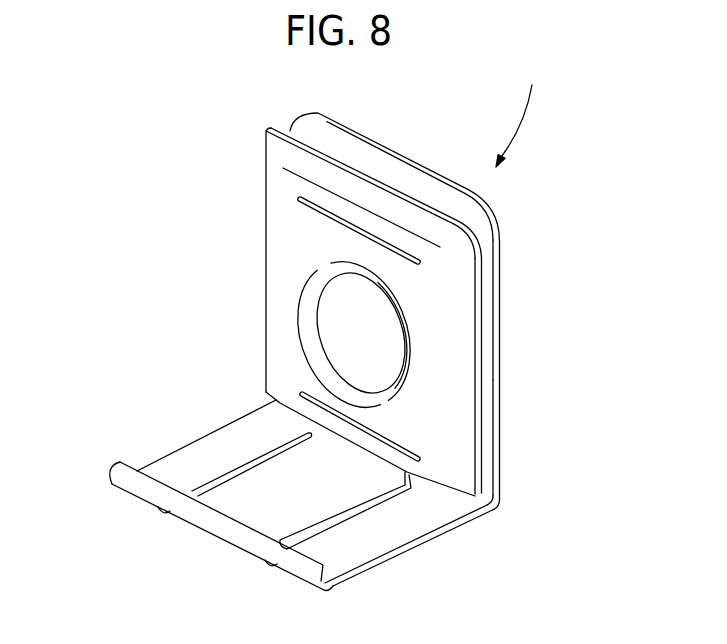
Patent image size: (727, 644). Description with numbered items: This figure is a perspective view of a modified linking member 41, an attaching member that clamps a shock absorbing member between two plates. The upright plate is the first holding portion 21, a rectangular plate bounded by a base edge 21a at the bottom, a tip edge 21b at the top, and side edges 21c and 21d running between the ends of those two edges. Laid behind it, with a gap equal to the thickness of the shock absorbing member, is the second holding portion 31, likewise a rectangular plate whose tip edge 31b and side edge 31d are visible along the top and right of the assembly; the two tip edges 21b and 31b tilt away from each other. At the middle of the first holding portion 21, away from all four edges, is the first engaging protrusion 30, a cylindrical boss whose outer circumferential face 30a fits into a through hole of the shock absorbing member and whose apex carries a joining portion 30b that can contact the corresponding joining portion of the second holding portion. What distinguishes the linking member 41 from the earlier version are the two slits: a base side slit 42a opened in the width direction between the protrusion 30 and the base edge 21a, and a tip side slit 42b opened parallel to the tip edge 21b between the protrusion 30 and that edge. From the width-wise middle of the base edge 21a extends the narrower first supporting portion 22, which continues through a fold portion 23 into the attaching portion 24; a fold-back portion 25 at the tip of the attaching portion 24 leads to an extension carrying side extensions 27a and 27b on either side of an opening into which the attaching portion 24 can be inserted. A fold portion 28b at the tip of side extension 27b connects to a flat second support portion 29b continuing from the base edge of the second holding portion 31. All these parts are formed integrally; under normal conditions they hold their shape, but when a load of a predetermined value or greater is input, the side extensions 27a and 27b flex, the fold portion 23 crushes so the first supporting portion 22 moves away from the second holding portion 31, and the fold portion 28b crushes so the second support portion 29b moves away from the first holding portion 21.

The first holding portion 21 is at (387, 343).
The base edge 21a is at (440, 485).
The tip edge 21b is at (403, 190).
The side edge 21c is at (266, 198).
The side edge 21d is at (486, 381).
The first supporting portion 22 is at (213, 436).
The fold portion 23 is at (358, 460).
The attaching portion 24 is at (230, 483).
The fold-back portion 25 is at (210, 517).
The side extension 27a is at (200, 442).
The side extension 27b is at (355, 545).
The fold portion 28b is at (488, 504).
The second support portion 29b is at (489, 470).
The first engaging protrusion 30 is at (295, 334).
The outer circumferential face 30a is at (307, 315).
The joining portion 30b is at (343, 338).
The second holding portion 31 is at (438, 278).
The tip edge 31b is at (365, 137).
The side edge 31d is at (500, 340).
The linking member 41 is at (522, 110).
The base side slit 42a is at (416, 452).
The tip side slit 42b is at (396, 258).